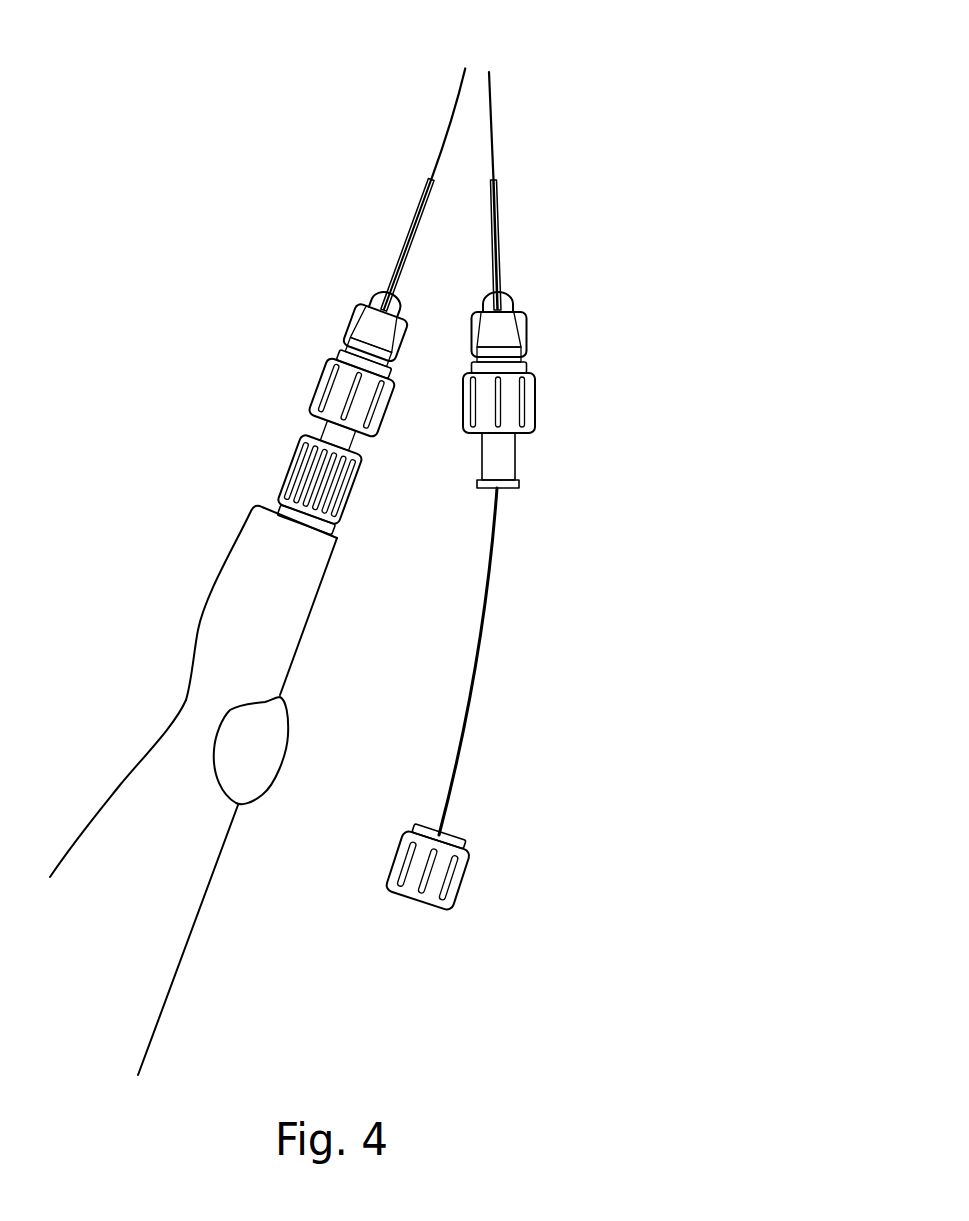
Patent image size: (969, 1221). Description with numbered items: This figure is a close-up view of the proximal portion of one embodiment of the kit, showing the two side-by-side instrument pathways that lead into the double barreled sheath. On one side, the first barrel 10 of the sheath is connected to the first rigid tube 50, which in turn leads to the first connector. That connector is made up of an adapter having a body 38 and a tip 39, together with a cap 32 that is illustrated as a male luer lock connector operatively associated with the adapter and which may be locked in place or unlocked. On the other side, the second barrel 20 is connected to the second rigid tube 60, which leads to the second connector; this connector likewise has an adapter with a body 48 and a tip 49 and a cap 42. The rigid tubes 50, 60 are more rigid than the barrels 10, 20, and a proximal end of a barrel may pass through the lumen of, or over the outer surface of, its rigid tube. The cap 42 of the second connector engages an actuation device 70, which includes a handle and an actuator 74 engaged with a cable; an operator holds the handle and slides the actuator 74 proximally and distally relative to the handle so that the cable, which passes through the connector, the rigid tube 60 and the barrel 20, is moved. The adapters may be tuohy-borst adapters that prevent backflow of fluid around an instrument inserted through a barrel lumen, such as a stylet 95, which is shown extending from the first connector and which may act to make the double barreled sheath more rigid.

The first barrel 10 is at (492, 118).
The second barrel 20 is at (462, 97).
The cap 32 is at (467, 883).
The body 38 is at (535, 400).
The tip 39 is at (527, 335).
The cap 42 is at (283, 468).
The body 48 is at (312, 397).
The tip 49 is at (363, 335).
The first rigid tube 50 is at (497, 198).
The second rigid tube 60 is at (417, 212).
The actuation device 70 is at (222, 632).
The actuator 74 is at (263, 757).
The stylet 95 is at (472, 680).